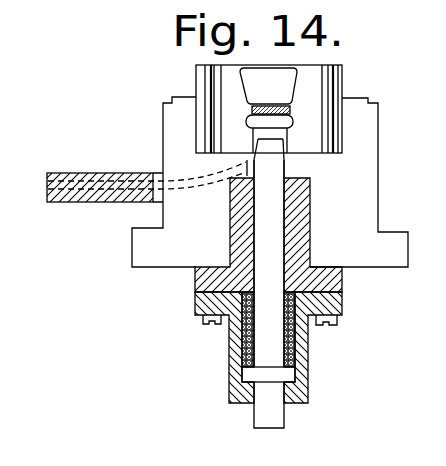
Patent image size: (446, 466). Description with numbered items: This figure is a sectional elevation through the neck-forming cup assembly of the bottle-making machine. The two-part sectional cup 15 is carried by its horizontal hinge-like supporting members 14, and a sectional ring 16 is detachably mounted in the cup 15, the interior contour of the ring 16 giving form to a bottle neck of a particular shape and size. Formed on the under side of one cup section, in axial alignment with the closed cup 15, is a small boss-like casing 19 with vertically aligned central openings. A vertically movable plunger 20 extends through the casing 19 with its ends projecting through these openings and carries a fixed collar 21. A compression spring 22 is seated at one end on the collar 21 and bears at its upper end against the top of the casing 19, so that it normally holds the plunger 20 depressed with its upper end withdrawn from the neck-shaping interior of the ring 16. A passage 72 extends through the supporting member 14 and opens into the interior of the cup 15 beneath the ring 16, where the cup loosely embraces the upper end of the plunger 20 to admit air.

The hinge-like supporting member 14 is at (65, 177).
The two-part sectional cup 15 is at (372, 165).
The sectional ring 16 is at (318, 77).
The boss-like casing 19 is at (230, 353).
The plunger 20 is at (262, 418).
The fixed collar 21 is at (283, 374).
The compression spring 22 is at (290, 341).
The passage 72 is at (192, 183).